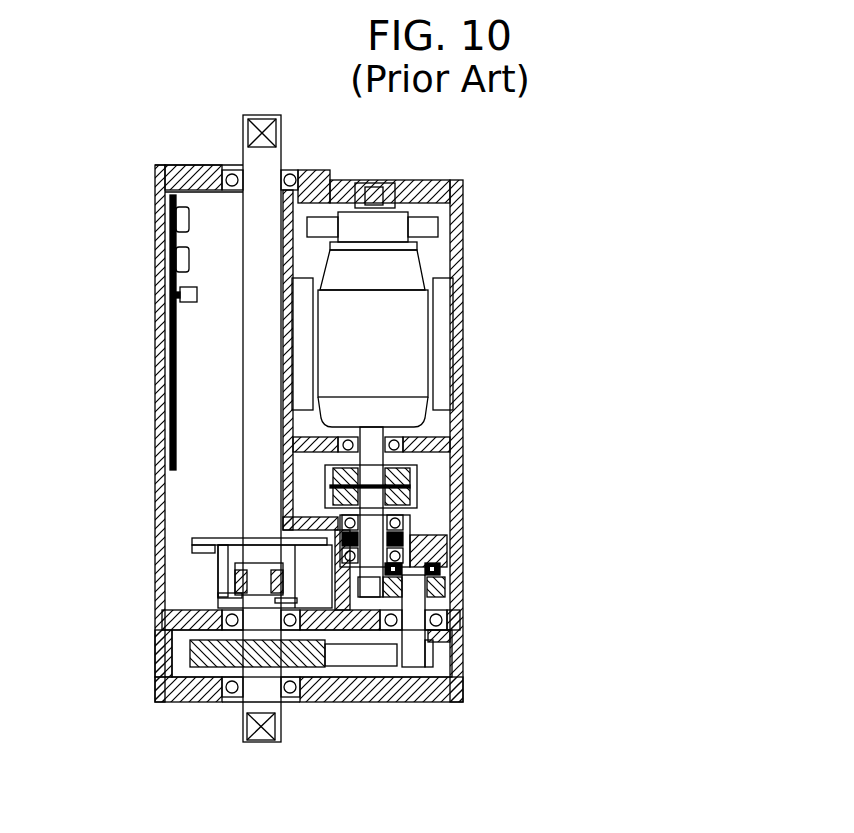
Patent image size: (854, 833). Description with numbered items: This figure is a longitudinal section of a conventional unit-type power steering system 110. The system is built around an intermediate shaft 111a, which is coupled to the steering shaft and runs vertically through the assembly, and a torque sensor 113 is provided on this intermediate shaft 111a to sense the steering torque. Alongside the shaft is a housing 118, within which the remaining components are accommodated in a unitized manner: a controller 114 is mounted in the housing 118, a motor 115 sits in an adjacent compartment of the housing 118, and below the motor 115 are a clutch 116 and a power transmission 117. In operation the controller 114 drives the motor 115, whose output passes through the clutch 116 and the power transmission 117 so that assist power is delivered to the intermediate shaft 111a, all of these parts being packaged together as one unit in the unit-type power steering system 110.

The unit-type power steering system 110 is at (480, 386).
The intermediate shaft 111a is at (242, 362).
The torque sensor 113 is at (205, 558).
The controller 114 is at (177, 232).
The motor 115 is at (422, 272).
The clutch 116 is at (417, 491).
The power transmission 117 is at (426, 650).
The housing 118 is at (450, 566).